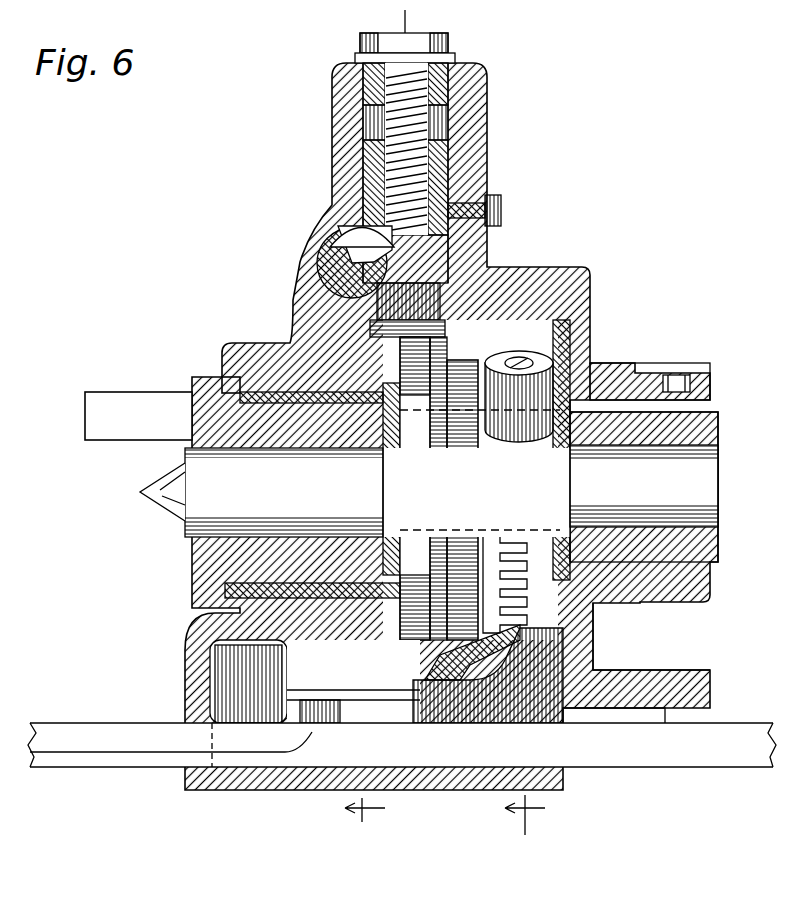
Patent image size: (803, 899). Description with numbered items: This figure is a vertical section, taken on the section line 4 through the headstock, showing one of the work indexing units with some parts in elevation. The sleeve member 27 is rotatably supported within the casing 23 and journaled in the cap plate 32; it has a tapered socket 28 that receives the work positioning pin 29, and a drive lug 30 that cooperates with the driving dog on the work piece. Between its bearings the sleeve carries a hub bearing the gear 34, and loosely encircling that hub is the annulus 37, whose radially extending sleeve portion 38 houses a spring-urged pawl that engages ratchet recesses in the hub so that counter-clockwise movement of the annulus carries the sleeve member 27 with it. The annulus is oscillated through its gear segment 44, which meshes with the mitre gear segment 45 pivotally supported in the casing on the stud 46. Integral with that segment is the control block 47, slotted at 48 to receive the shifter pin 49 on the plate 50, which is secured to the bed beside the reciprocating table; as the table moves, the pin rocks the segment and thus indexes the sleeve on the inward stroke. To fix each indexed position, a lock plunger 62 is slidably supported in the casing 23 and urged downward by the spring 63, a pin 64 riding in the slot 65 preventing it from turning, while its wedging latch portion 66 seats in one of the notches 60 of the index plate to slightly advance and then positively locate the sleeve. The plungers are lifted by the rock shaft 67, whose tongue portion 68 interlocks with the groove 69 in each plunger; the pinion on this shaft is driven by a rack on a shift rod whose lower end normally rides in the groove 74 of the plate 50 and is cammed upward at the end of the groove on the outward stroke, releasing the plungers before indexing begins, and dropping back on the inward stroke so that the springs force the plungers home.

The section line 4- 4 is at (445, 829).
The casing 23 is at (462, 123).
The sleeve member 27 is at (230, 548).
The tapered socket 28 is at (190, 392).
The work positioning pin 29 is at (163, 483).
The drive lug 30 is at (100, 440).
The cap plate 32 is at (590, 290).
The gear 34 is at (545, 276).
The annulus 37 is at (522, 465).
The radially extending sleeve portion 38 is at (563, 345).
The gear segment 44 is at (600, 634).
The mitre gear segment 45 is at (318, 705).
The stud 46 is at (228, 643).
The control block 47 is at (258, 692).
The slot 48 is at (332, 705).
The shifter pin 49 is at (282, 712).
The plate 50 is at (610, 752).
The notch 60 is at (395, 405).
The lock plunger 62 is at (482, 258).
The spring 63 is at (488, 92).
The pin 64 is at (478, 194).
The slot 65 is at (478, 168).
The wedging latch portion 66 is at (372, 322).
The rock shaft 67 is at (345, 260).
The tongue portion 68 is at (358, 244).
The groove 69 is at (501, 211).
The groove 74 is at (97, 740).